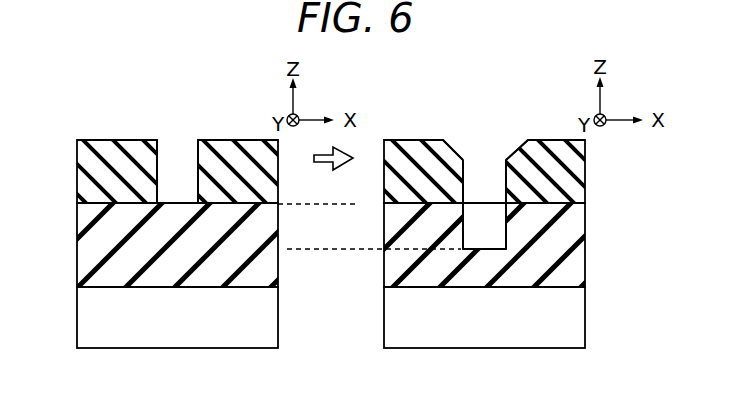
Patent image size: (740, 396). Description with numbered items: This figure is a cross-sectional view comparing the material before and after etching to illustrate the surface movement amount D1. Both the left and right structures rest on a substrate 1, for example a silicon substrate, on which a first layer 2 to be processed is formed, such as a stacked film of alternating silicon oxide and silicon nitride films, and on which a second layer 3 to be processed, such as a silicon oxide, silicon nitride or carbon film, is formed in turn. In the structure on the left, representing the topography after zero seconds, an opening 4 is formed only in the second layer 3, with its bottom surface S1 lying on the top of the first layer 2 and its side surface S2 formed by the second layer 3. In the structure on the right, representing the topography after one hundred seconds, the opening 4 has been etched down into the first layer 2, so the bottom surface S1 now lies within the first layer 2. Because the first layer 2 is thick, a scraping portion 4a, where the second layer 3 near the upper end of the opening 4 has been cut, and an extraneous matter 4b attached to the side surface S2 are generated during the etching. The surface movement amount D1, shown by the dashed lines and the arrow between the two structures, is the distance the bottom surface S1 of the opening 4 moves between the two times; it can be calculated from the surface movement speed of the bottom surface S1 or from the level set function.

The substrate 1 is at (91, 317).
The first layer to be processed 2 is at (91, 262).
The second layer to be processed 3 is at (91, 185).
The opening 4 is at (178, 160).
The scraping portion 4a is at (458, 146).
The extraneous matter 4b is at (467, 168).
The bottom surface of the opening S1 is at (178, 204).
The side surface of the opening S2 is at (198, 180).
The surface movement amount D1 is at (330, 204).